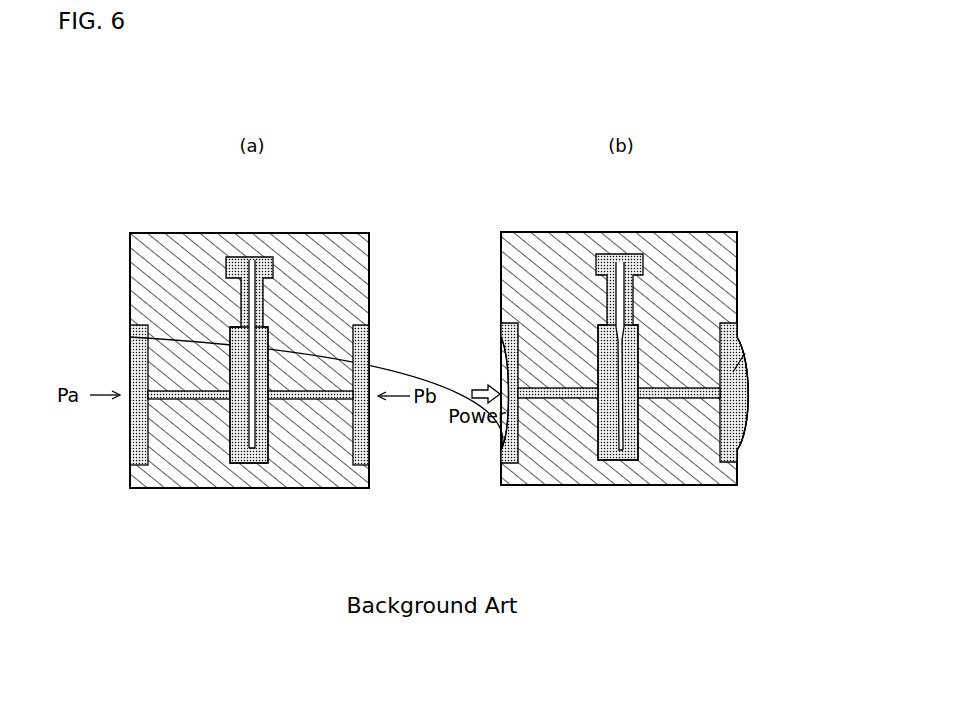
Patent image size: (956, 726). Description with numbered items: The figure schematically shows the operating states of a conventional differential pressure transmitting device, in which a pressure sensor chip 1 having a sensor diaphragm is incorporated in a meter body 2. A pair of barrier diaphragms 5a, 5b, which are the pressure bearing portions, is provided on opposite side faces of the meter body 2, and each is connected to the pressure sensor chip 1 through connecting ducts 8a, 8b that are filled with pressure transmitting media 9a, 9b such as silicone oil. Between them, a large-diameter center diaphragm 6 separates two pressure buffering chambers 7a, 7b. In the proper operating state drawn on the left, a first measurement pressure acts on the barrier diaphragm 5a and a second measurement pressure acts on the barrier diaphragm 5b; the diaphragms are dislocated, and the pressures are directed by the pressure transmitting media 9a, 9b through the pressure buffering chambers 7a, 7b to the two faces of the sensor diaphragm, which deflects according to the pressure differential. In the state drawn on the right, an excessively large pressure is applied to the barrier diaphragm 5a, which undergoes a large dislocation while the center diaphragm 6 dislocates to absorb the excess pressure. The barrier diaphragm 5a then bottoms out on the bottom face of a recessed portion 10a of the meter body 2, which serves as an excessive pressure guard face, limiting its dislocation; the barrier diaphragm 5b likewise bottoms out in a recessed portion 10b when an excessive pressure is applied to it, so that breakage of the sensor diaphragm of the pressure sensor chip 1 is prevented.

The pressure sensor chip 1 is at (409, 357).
The meter body 2 is at (130, 253).
The barrier diaphragm 5a is at (128, 358).
The barrier diaphragm 5b is at (372, 423).
The center diaphragm 6 is at (240, 446).
The pressure buffering chamber 7a is at (232, 345).
The pressure buffering chamber 7b is at (258, 345).
The connecting duct 8a is at (188, 400).
The connecting duct 8b is at (313, 399).
The pressure transmitting medium 9a is at (130, 413).
The pressure transmitting medium 9b is at (355, 367).
The recessed portion 10a is at (502, 337).
The recessed portion 10b is at (747, 438).